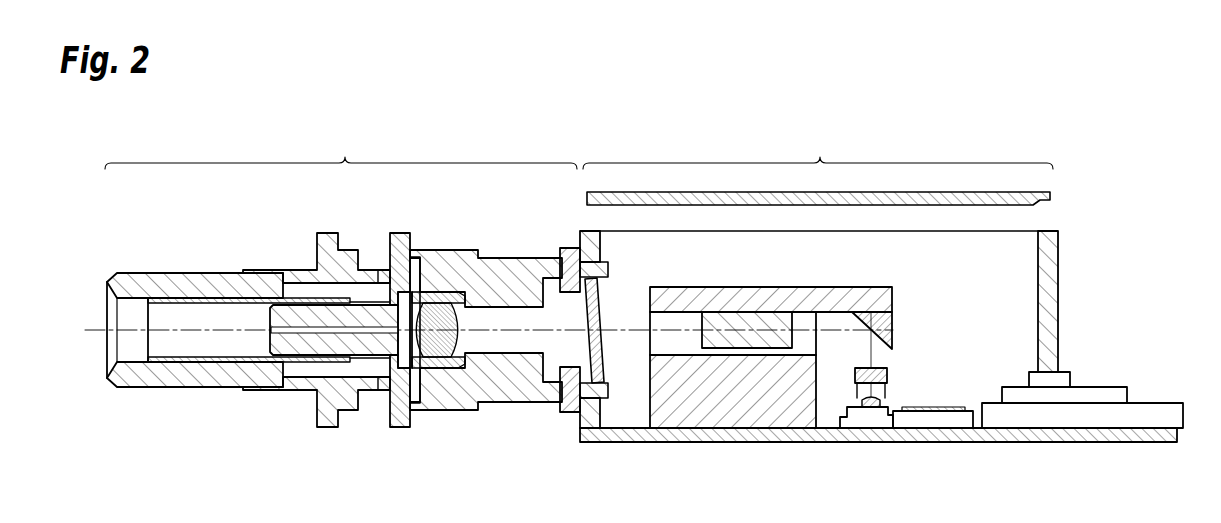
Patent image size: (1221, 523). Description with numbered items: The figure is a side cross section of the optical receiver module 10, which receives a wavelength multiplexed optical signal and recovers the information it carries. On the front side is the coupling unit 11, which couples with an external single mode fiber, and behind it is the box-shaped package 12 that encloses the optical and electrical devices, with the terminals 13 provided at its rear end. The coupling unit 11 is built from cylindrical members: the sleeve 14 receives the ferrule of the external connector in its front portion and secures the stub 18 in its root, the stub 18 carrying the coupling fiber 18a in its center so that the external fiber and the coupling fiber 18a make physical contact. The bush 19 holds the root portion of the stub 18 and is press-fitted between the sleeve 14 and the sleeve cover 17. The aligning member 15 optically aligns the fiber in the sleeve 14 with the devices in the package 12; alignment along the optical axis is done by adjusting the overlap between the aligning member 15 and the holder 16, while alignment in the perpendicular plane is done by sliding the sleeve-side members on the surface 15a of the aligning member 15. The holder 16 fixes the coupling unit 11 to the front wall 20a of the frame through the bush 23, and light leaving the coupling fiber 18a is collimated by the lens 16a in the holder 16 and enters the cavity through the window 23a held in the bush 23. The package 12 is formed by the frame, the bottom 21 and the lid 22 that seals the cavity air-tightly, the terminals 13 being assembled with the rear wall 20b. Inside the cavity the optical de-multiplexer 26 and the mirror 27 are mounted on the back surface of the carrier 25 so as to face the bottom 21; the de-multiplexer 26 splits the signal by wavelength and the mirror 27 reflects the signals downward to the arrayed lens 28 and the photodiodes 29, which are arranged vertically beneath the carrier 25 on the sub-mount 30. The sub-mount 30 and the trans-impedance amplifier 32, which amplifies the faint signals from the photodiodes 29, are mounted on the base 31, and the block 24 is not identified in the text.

The optical receiver module 10 is at (929, 103).
The coupling unit 11 is at (341, 146).
The package 12 is at (818, 147).
The terminals 13 is at (1115, 387).
The sleeve 14 is at (185, 358).
The aligning member 15 is at (405, 250).
The surface of the aligning member 15a is at (393, 252).
The holder 16 is at (501, 262).
The lens 16a is at (439, 305).
The sleeve cover 17 is at (235, 377).
The stub 18 is at (302, 347).
The coupling fiber 18a is at (273, 320).
The bush 19 is at (370, 373).
The front wall 20a is at (586, 256).
The rear wall 20b is at (1053, 272).
The bottom 21 is at (697, 432).
The lid 22 is at (1052, 197).
The bush 23 is at (567, 412).
The window 23a is at (608, 372).
The lower base block 24 is at (778, 405).
The carrier 25 is at (690, 292).
The optical de-multiplexer 26 is at (758, 315).
The mirror 27 is at (893, 322).
The arrayed lens 28 is at (882, 375).
The photodiodes 29 is at (870, 408).
The sub-mount 30 is at (851, 417).
The base 31 is at (943, 428).
The trans-impedance amplifier 32 is at (957, 407).